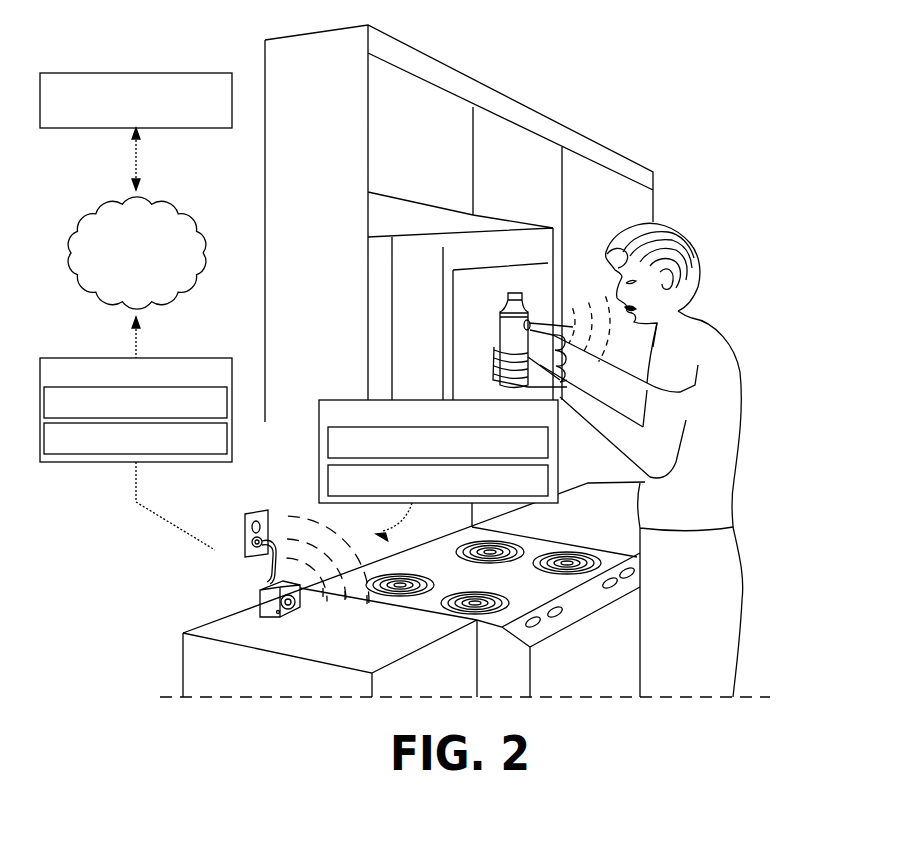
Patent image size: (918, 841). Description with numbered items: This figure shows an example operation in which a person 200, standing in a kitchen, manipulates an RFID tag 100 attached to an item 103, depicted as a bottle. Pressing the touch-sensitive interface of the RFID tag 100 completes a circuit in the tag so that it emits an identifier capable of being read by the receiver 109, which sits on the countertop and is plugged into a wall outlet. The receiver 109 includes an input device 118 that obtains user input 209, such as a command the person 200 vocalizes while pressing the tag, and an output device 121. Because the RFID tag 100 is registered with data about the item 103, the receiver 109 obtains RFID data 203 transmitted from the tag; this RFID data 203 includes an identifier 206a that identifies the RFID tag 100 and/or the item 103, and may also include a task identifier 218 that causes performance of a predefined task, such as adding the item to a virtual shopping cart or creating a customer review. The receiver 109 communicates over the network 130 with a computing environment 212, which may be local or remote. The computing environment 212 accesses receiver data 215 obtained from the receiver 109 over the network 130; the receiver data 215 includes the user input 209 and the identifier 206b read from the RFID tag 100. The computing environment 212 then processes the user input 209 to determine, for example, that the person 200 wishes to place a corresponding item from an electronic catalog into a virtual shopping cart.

The RFID tag 100 is at (540, 320).
The item 103 is at (497, 334).
The receiver 109 is at (260, 597).
The input device 118 is at (278, 618).
The output device 121 is at (300, 604).
The network 130 is at (137, 253).
The person 200 is at (738, 393).
The RFID data 203 is at (438, 451).
The identifier 206a is at (438, 442).
The identifier 206b is at (135, 402).
The user input 209 is at (135, 438).
The computing environment 212 is at (136, 100).
The receiver data 215 is at (136, 410).
The task identifier 218 is at (438, 480).